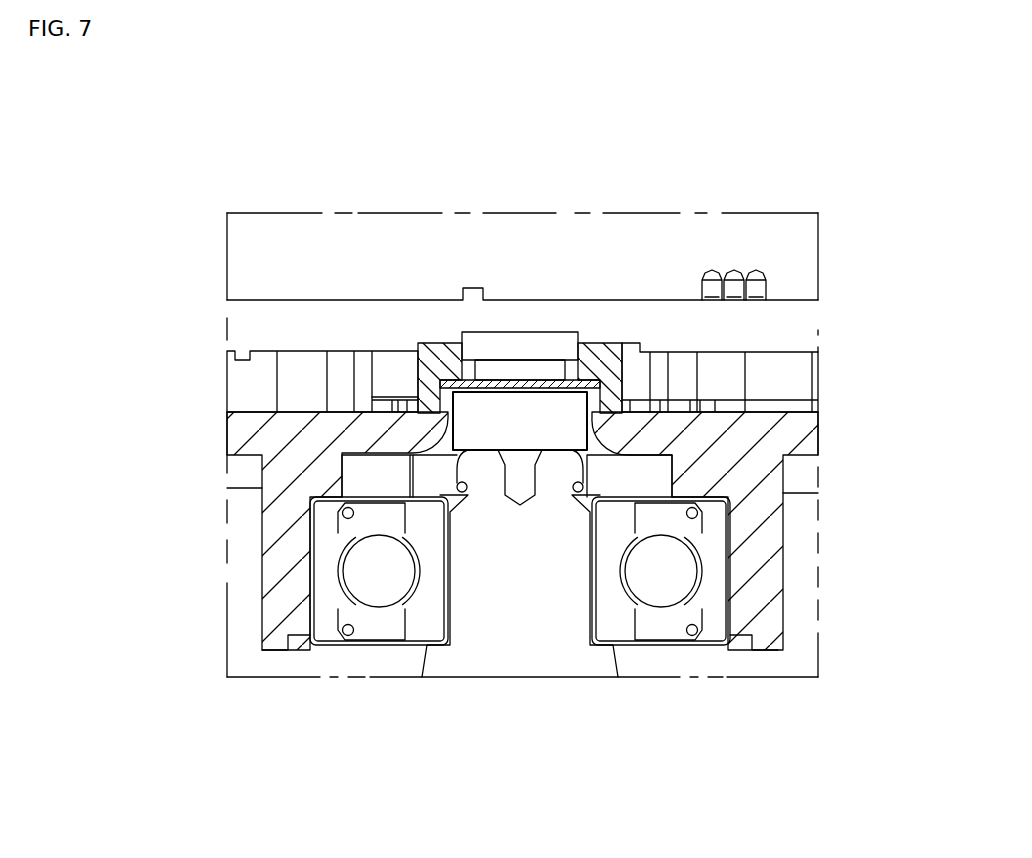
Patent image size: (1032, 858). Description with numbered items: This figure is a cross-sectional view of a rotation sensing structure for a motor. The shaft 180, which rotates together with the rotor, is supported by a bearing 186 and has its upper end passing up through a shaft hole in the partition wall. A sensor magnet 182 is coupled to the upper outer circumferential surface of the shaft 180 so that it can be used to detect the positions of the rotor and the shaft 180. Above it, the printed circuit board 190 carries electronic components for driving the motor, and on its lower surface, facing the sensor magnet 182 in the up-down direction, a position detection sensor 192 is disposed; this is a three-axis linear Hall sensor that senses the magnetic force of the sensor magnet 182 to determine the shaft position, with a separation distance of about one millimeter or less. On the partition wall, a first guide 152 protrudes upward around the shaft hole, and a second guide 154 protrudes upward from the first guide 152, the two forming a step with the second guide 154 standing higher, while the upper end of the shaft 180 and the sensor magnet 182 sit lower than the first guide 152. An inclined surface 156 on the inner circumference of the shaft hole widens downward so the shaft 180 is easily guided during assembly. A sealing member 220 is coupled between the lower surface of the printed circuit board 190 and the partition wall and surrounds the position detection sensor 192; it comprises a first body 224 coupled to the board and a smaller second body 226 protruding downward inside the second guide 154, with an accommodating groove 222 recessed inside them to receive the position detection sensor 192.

The printed circuit board 190 is at (272, 318).
The second guide 154 is at (448, 372).
The first guide 152 is at (372, 403).
The inclined surface 156 is at (375, 450).
The first body 224 is at (425, 343).
The second body 226 is at (447, 380).
The position detection sensor 192 is at (512, 347).
The accommodating groove 222 is at (568, 335).
The sealing member 220 is at (590, 367).
The sensor magnet 182 is at (567, 422).
The bearing 186 is at (710, 572).
The shaft 180 is at (520, 603).